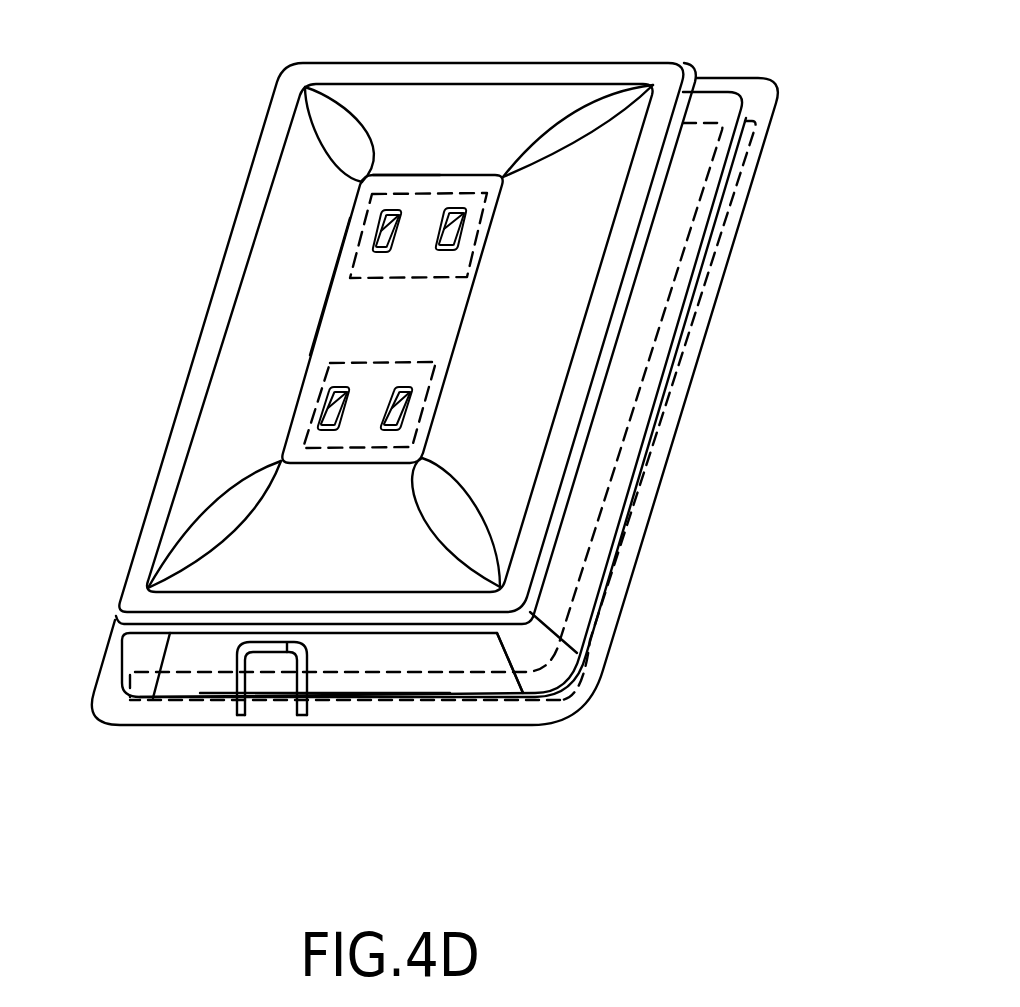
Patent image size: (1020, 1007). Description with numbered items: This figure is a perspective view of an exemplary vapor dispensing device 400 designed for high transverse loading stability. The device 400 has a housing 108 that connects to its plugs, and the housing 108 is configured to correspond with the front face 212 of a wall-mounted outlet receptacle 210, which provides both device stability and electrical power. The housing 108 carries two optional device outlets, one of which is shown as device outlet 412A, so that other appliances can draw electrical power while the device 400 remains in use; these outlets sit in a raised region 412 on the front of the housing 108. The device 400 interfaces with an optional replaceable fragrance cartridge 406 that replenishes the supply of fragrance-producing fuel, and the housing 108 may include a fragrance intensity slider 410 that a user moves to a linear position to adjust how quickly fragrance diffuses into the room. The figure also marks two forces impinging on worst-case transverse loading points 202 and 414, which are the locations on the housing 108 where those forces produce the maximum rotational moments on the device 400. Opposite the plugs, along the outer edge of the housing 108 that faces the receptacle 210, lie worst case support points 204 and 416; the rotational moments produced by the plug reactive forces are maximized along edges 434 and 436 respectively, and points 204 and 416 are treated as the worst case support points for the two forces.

The vapor dispensing device 400 is at (158, 122).
The replaceable fragrance cartridge 406 is at (527, 94).
The raised panel 412 is at (436, 326).
The worst-case transverse loading point 414 is at (358, 331).
The worst-case transverse loading point 202 is at (417, 178).
The device outlet 412A is at (470, 230).
The wall-mounted outlet receptacle 210 is at (760, 88).
The front face 212 is at (702, 322).
The edge 436 is at (718, 243).
The worst case support point 416 is at (668, 378).
The edge 434 is at (578, 696).
The housing 108 is at (568, 582).
The worst case support point 204 is at (333, 692).
The fragrance intensity slider 410 is at (267, 688).